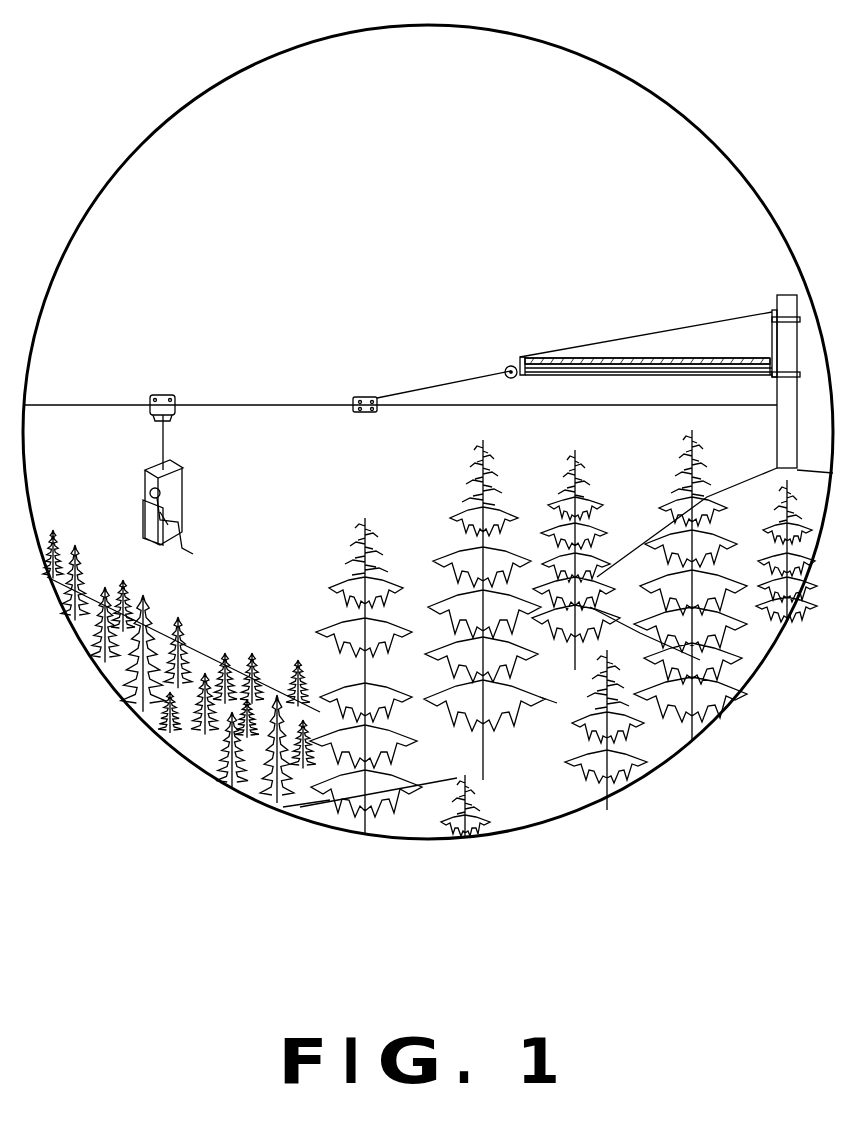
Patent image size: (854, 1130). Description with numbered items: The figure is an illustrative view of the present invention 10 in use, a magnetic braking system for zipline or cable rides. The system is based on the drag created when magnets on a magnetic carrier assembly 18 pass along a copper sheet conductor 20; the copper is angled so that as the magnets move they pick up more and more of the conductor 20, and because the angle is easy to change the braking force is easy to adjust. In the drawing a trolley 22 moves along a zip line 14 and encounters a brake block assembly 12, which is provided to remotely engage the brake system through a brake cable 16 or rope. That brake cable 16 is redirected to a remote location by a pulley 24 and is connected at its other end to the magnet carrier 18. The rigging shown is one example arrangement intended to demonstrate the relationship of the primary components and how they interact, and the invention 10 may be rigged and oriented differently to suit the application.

The present invention 10 is at (730, 94).
The brake block assembly 12 is at (353, 398).
The zip line 14 is at (267, 407).
The brake cable 16 is at (460, 380).
The magnetic carrier assembly 18 is at (752, 358).
The copper sheet conductor 20 is at (662, 358).
The trolley 22 is at (167, 395).
The pulley 24 is at (514, 380).